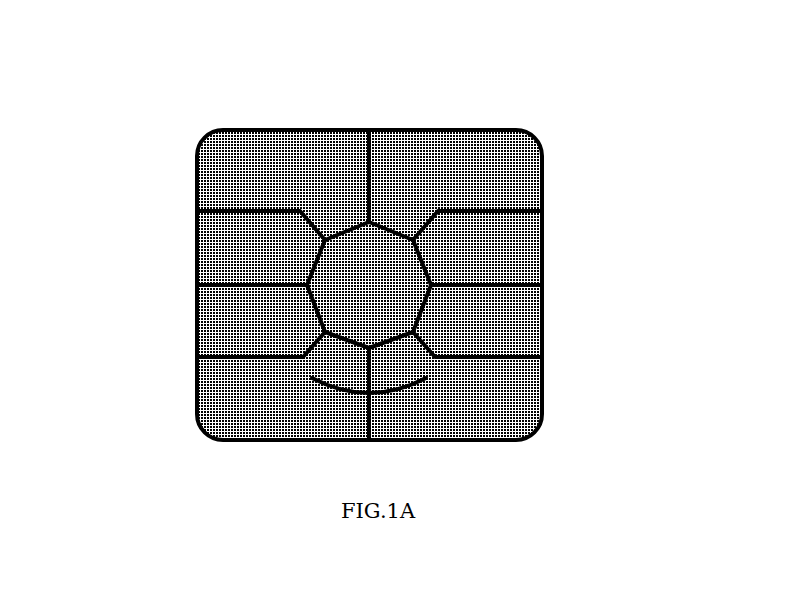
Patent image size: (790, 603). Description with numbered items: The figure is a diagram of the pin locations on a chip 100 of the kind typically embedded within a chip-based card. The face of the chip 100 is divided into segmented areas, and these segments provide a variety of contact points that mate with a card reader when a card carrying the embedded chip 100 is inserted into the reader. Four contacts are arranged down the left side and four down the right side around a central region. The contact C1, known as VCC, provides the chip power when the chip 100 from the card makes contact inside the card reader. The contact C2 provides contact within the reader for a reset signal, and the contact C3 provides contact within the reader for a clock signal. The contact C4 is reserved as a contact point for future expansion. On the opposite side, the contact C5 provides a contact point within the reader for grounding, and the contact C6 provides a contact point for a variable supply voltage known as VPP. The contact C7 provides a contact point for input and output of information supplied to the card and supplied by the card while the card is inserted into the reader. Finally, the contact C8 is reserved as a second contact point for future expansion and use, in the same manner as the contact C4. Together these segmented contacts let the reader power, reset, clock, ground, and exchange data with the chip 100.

The chip 100 is at (362, 127).
The VCC contact point C1 is at (200, 185).
The reset contact point C2 is at (178, 252).
The clock contact point C3 is at (178, 321).
The reserved contact point C4 is at (229, 394).
The grounding contact point C5 is at (517, 192).
The VPP contact point C6 is at (561, 252).
The input/output contact point C7 is at (561, 321).
The second reserved contact point C8 is at (479, 374).